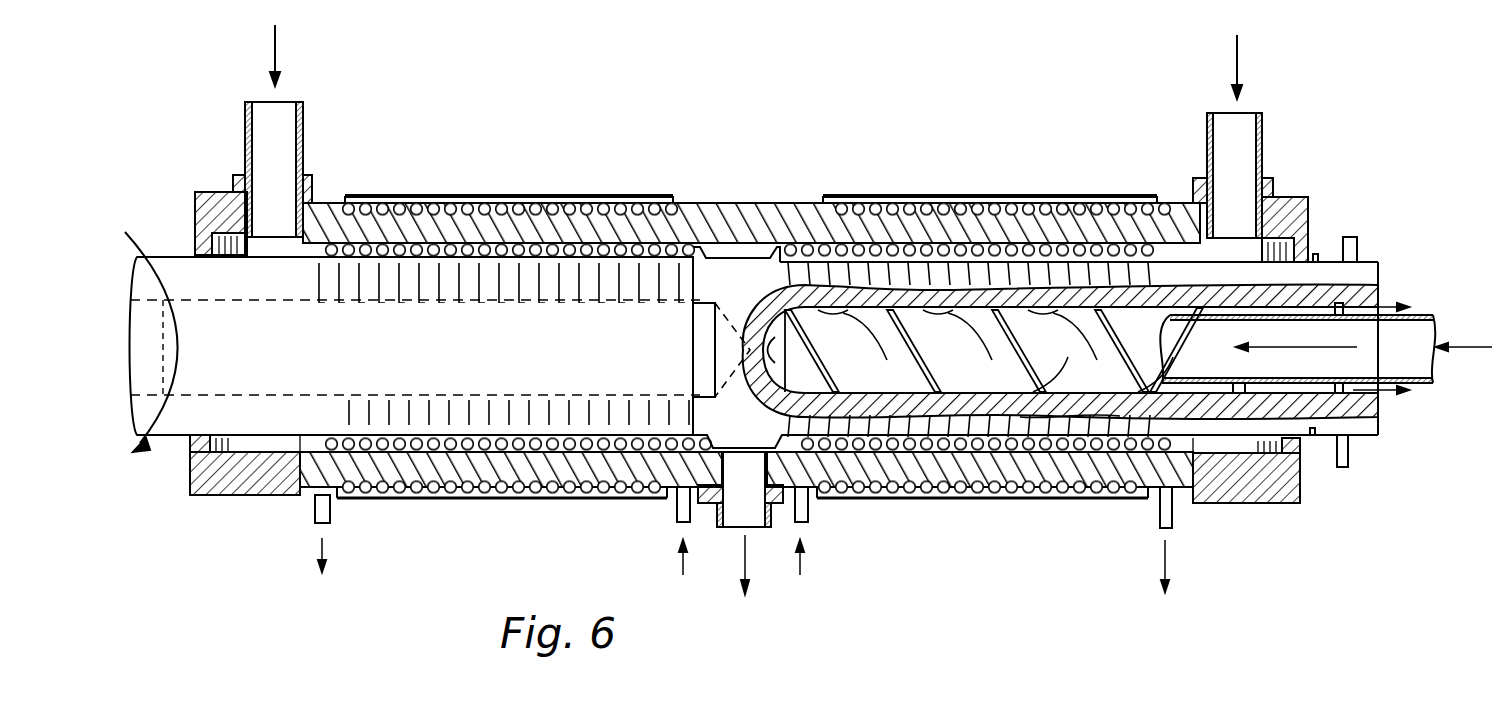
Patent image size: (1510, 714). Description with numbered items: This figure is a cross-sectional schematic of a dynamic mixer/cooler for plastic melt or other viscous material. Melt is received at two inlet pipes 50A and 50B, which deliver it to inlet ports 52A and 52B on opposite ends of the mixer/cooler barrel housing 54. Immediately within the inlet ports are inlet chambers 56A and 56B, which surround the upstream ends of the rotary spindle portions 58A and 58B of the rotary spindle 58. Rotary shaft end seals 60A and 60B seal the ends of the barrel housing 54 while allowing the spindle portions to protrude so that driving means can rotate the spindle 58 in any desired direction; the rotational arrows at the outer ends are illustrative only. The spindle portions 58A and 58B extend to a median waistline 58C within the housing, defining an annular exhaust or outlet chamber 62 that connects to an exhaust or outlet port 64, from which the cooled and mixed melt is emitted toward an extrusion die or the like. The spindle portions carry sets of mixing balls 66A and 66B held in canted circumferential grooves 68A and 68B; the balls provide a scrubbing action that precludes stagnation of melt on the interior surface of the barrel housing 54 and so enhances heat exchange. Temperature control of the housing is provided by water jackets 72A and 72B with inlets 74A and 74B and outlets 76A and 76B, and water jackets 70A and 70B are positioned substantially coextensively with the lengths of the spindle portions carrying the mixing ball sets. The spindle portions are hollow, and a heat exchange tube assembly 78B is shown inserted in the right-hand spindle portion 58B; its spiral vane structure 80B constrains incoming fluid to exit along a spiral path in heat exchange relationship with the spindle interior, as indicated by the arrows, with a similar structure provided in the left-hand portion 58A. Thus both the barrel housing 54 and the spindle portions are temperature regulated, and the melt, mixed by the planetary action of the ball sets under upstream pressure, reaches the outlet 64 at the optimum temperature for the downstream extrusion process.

The inlet pipe 50A is at (303, 140).
The inlet pipe 50B is at (1262, 147).
The inlet port 52A is at (322, 203).
The inlet port 52B is at (1167, 203).
The mixer/cooler barrel housing 54 is at (780, 197).
The inlet chamber 56A is at (208, 198).
The inlet chamber 56B is at (1308, 197).
The rotary spindle 58 is at (1373, 253).
The rotary spindle portion 58A is at (232, 291).
The rotary spindle portion 58B is at (1217, 286).
The waistline 58C is at (705, 424).
The rotary shaft end seal 60A is at (208, 447).
The rotary shaft end seal 60B is at (1300, 458).
The annular exhaust or outlet chamber 62 is at (737, 240).
The exhaust or outlet port 64 is at (766, 515).
The mixing balls 66A is at (477, 240).
The mixing balls 66B is at (1015, 243).
The canted circumferential grooves 68A is at (330, 410).
The canted circumferential grooves 68B is at (903, 277).
The water jacket 70A is at (568, 195).
The water jacket 70B is at (945, 196).
The water jacket 72A is at (530, 488).
The water jacket 72B is at (945, 490).
The inlet 74A is at (677, 508).
The inlet 74B is at (806, 508).
The outlet 76A is at (330, 508).
The outlet 76B is at (1173, 518).
The heat exchange tube assembly 78B is at (929, 378).
The spiral vane structure 80B is at (1068, 430).